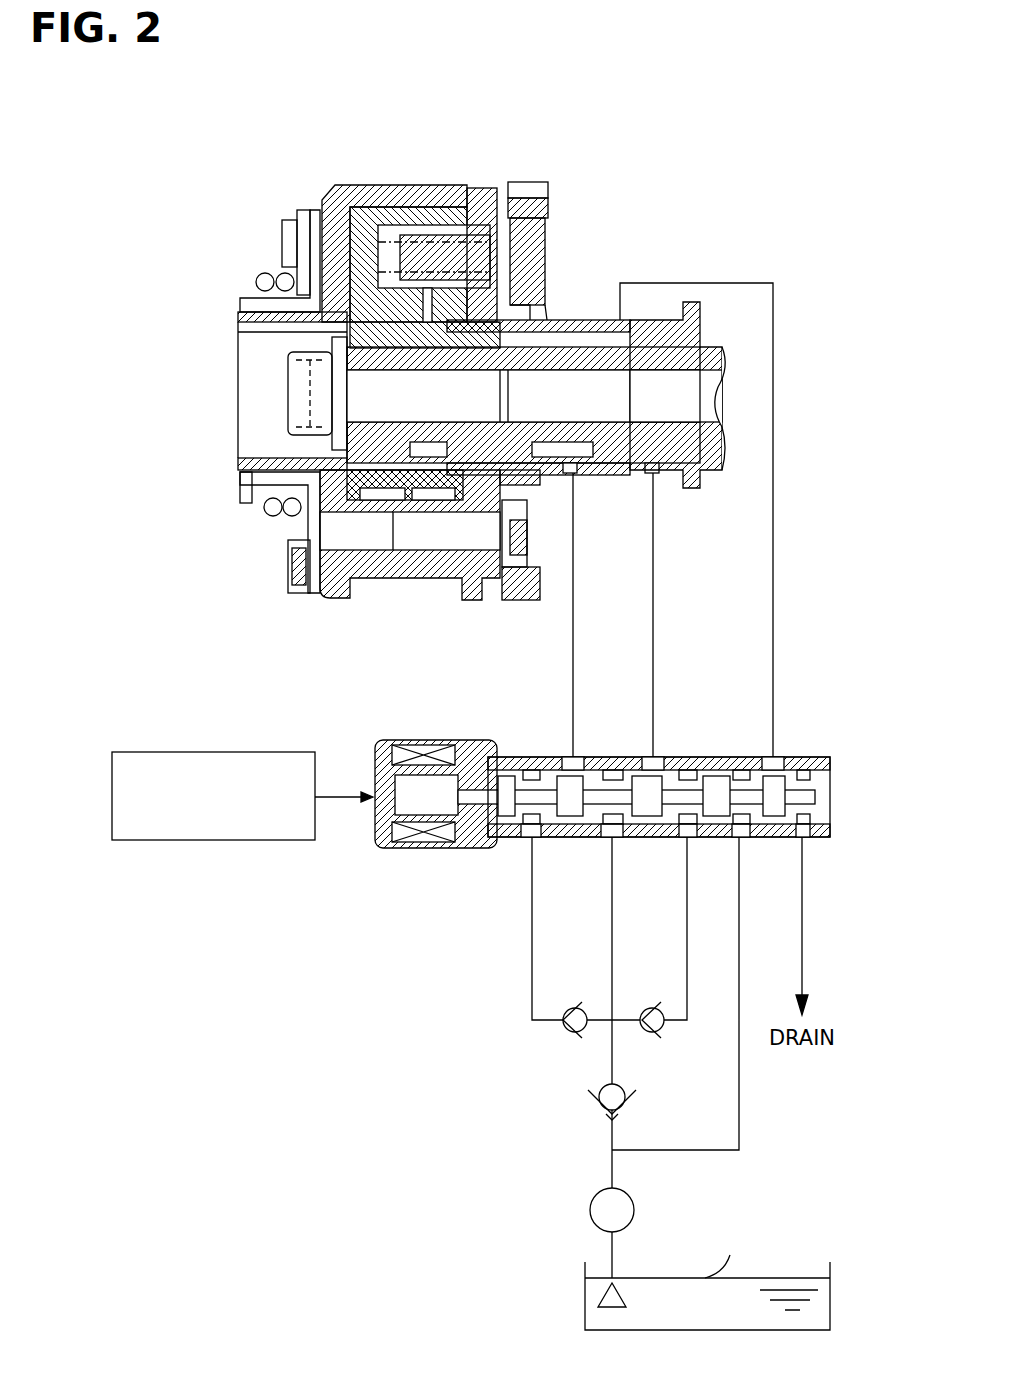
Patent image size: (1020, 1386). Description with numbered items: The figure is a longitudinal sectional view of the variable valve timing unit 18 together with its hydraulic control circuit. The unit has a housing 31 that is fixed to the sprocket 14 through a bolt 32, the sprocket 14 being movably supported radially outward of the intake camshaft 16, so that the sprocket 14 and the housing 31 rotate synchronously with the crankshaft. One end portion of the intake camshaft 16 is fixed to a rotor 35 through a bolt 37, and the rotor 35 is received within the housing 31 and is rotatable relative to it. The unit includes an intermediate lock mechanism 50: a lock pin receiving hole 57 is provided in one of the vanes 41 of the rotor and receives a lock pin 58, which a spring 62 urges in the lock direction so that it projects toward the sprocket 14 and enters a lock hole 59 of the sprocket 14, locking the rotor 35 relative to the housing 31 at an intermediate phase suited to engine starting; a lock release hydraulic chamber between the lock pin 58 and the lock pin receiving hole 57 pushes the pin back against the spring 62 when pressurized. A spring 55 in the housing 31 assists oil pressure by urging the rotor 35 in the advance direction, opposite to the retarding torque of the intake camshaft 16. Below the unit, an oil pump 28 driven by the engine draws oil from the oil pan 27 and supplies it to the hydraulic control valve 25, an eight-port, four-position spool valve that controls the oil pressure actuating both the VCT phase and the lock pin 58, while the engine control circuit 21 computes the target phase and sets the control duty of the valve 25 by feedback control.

The sprocket 14 is at (548, 207).
The intake camshaft 16 is at (655, 332).
The variable valve timing unit 18 is at (343, 180).
The engine control circuit 21 is at (178, 752).
The hydraulic control valve (oil control valve, OCV) 25 is at (810, 757).
The oil pan 27 is at (830, 1300).
The oil pump 28 is at (590, 1210).
The housing 31 is at (400, 186).
The bolt 32 is at (528, 538).
The rotor 35 is at (322, 275).
The bolt 37 is at (288, 392).
The vane 41 is at (363, 186).
The intermediate lock mechanism 50 is at (438, 205).
The spring 55 is at (272, 512).
The lock pin receiving hole 57 is at (328, 186).
The lock pin 58 is at (500, 268).
The lock hole 59 is at (486, 212).
The spring 62 is at (385, 300).